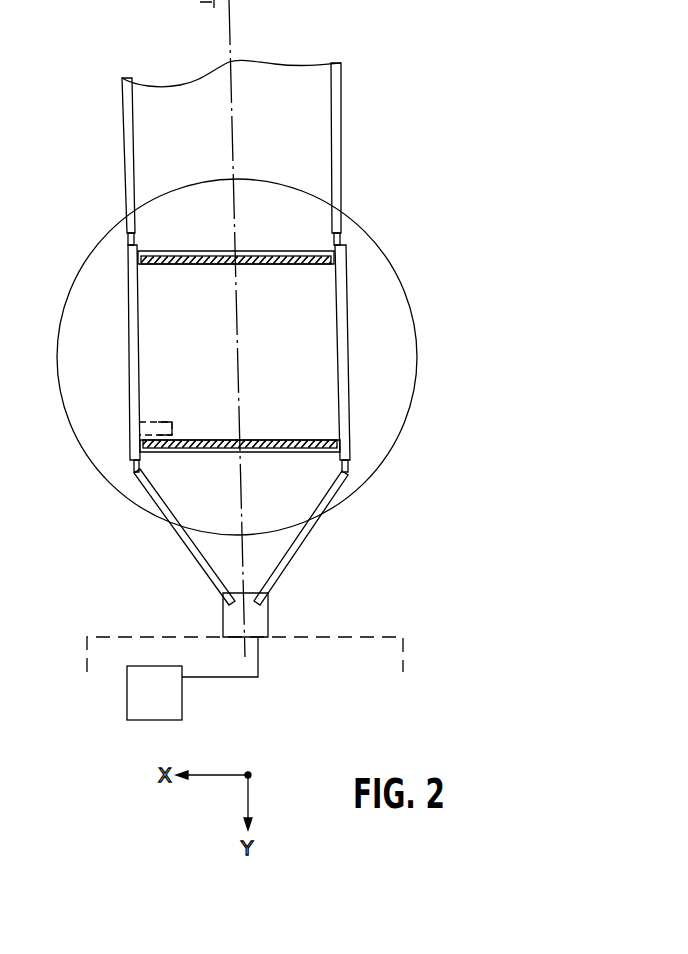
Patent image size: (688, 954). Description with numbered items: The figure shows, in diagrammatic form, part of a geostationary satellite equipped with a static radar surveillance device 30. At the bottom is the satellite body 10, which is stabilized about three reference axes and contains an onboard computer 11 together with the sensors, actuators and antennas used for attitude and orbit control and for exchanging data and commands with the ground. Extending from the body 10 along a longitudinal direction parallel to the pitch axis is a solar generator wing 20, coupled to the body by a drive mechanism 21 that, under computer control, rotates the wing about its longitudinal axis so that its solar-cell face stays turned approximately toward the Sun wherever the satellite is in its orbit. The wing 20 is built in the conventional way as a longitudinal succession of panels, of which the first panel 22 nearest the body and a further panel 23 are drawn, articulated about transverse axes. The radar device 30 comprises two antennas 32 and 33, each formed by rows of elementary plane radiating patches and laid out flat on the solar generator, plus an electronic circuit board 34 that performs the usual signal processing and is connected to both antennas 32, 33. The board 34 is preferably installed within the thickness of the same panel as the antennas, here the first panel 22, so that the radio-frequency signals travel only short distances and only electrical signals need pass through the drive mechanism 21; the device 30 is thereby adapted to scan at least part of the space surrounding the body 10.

The body 10 is at (304, 667).
The onboard computer 11 is at (183, 708).
The solar generator wing 20 is at (284, 144).
The drive mechanism 21 is at (268, 617).
The first panel 22 is at (348, 370).
The panel 23 is at (342, 158).
The static radar surveillance device 30 is at (125, 432).
The antenna 32 is at (302, 264).
The antenna 33 is at (302, 440).
The electronic circuit board 34 is at (158, 420).